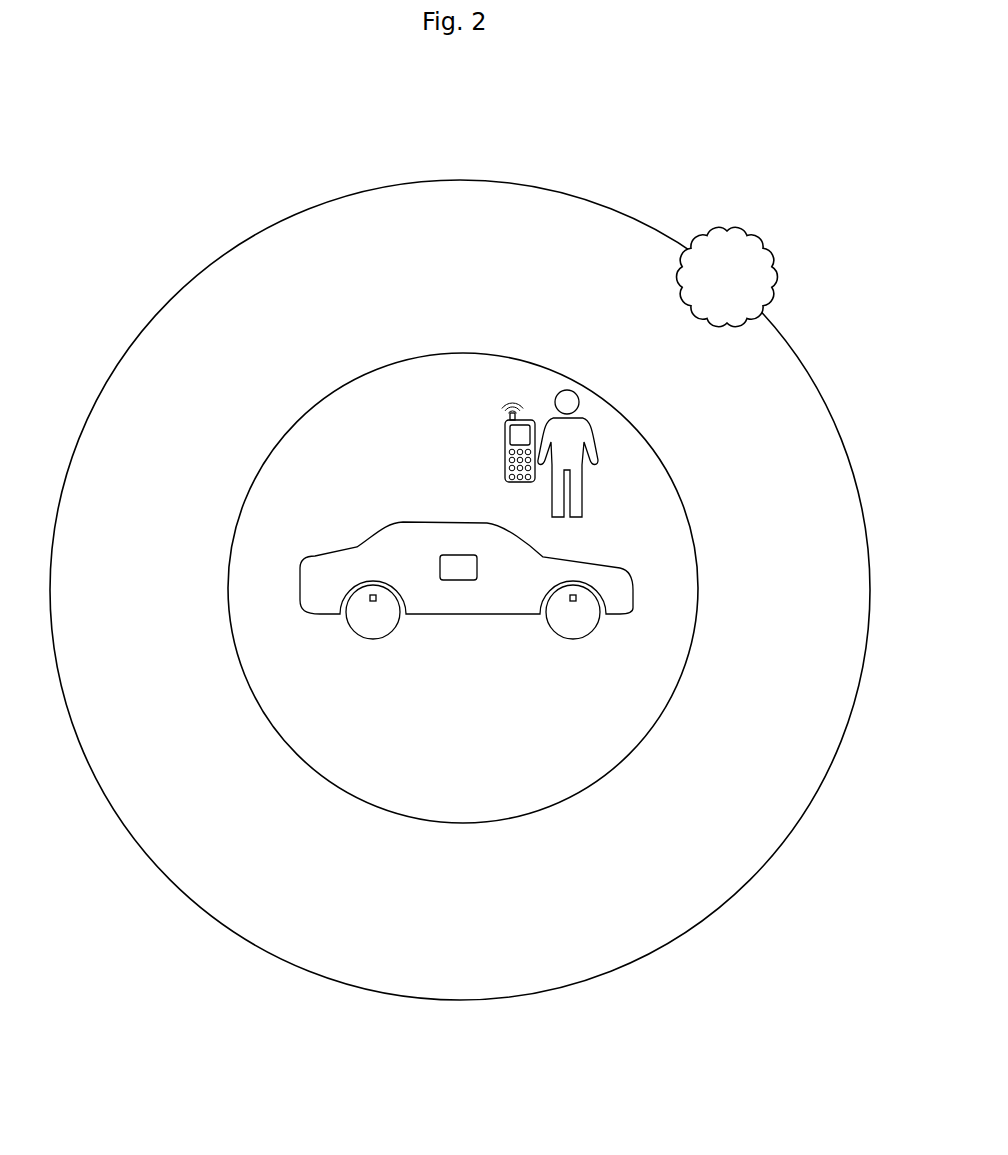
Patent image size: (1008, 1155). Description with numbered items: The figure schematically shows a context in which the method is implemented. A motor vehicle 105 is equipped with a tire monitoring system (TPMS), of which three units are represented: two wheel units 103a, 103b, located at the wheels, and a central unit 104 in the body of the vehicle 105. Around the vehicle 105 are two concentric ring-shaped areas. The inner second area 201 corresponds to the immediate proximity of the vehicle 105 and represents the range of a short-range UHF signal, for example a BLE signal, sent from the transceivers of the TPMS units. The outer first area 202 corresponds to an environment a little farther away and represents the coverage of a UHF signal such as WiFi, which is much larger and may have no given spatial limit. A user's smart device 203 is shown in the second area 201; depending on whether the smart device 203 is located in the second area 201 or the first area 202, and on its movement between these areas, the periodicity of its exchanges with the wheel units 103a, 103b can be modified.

The motor vehicle 105 is at (460, 579).
The central unit 104 is at (458, 580).
The wheel unit 103a is at (373, 601).
The wheel unit 103b is at (573, 601).
The second area 201 is at (272, 430).
The first area 202 is at (234, 243).
The smart device 203 is at (533, 423).